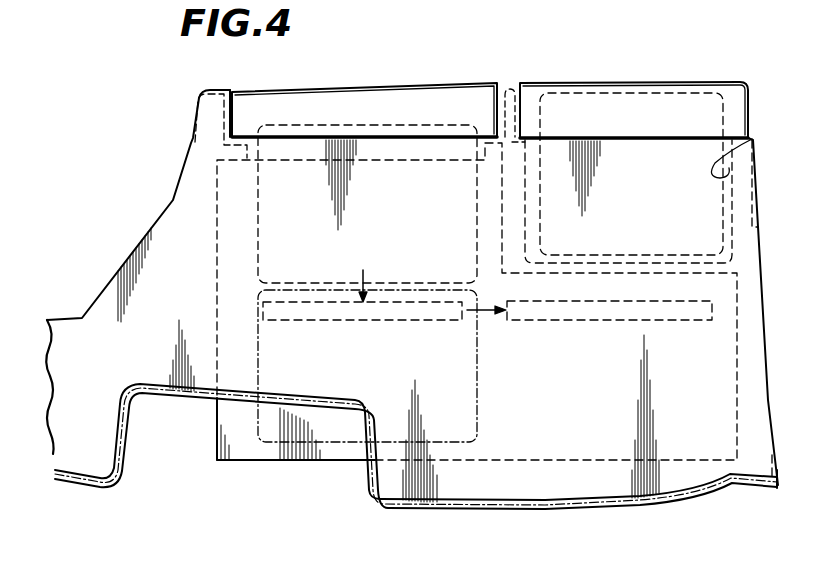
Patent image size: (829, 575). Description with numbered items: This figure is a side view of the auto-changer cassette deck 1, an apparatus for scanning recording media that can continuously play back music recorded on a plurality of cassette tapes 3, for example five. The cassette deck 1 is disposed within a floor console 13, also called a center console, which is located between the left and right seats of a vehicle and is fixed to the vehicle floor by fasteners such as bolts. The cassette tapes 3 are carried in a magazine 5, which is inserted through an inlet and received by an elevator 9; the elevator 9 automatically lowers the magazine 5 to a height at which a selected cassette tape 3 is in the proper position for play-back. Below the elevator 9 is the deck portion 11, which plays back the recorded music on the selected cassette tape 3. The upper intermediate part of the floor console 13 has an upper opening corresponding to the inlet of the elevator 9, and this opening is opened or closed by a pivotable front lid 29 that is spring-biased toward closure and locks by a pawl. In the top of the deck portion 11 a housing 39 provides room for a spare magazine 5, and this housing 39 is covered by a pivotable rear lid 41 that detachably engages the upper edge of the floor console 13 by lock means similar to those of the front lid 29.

The auto-changer cassette deck 1 is at (196, 451).
The cassette tape 3 is at (435, 321).
The magazine 5 is at (423, 124).
The elevator 9 is at (312, 454).
The deck portion 11 is at (604, 455).
The floor console 13 is at (768, 332).
The front lid 29 is at (372, 87).
The housing 39 is at (752, 139).
The rear lid 41 is at (640, 82).